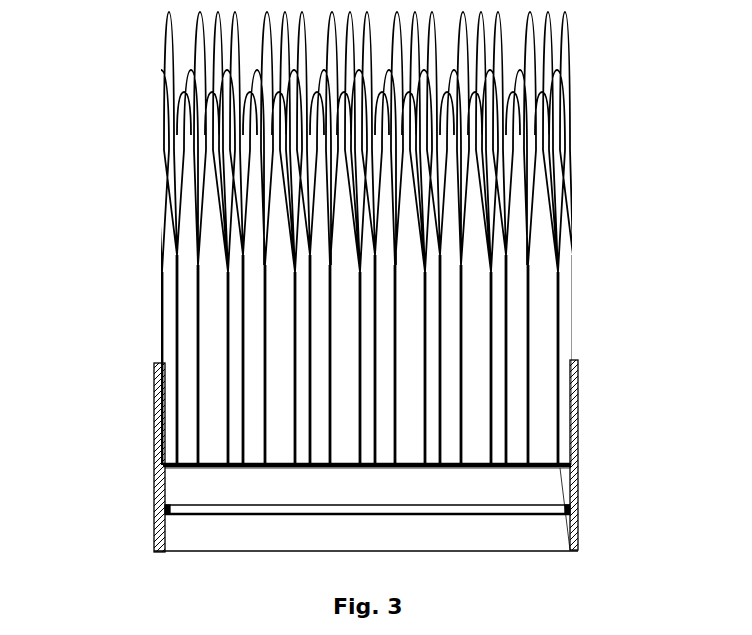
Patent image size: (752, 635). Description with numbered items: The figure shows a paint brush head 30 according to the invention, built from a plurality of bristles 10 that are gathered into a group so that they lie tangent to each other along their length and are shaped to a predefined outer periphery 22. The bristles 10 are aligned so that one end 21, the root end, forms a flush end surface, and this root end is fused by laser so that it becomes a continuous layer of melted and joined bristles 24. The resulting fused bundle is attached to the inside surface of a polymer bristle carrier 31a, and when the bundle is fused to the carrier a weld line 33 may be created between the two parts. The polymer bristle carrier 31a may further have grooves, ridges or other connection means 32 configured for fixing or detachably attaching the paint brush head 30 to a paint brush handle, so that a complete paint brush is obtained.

The bristles 10 is at (395, 238).
The paint brush head 30 is at (76, 276).
The polymer bristle carrier 31a is at (396, 448).
The predefined outer periphery 22 is at (162, 462).
The continuous layer of melted and joined bristles 24 is at (367, 526).
The connection means 32 is at (367, 560).
The one end of the bristles 21 is at (367, 542).
The weld line 33 is at (527, 542).